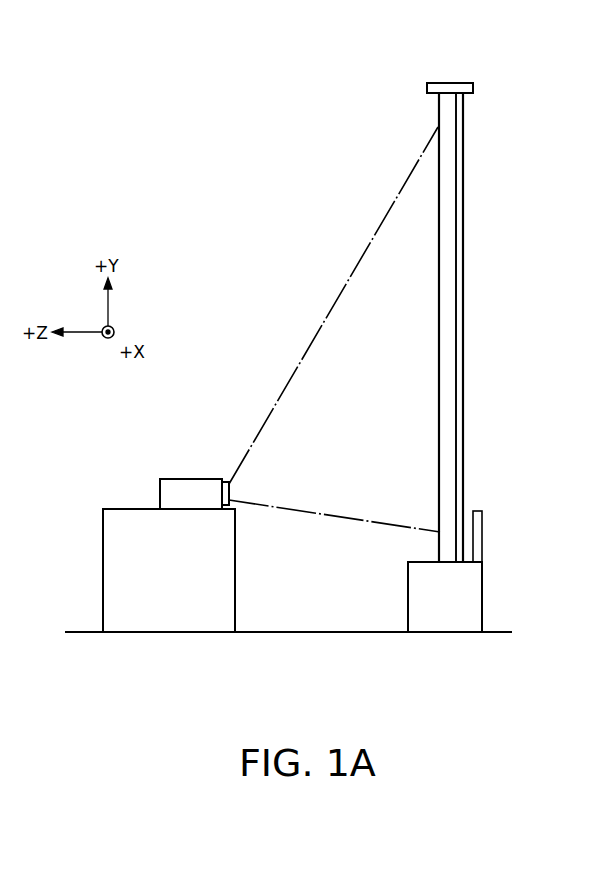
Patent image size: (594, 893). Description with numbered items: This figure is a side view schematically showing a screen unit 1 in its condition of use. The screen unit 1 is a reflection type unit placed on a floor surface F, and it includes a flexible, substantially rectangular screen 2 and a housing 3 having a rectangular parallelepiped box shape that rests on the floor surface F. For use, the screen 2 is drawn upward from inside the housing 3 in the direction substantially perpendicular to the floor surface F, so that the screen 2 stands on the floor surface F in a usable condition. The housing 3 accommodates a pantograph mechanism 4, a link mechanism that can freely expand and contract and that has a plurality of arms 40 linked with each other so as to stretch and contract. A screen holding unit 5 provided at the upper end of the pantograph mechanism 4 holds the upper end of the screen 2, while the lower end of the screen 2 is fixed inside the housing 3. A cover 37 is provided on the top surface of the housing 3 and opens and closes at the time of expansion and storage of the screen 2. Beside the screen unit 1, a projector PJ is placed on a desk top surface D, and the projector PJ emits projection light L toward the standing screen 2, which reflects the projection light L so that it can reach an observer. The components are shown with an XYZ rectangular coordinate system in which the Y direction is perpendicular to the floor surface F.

The screen unit 1 is at (449, 328).
The screen 2 is at (438, 345).
The housing 3 is at (505, 587).
The pantograph mechanism 4 is at (486, 327).
The screen holding unit 5 is at (452, 82).
The cover 37 is at (477, 535).
The arms 40 is at (464, 307).
The disk top surface D is at (124, 508).
The projector PJ is at (193, 478).
The projection light L is at (334, 329).
The floor surface F is at (321, 631).